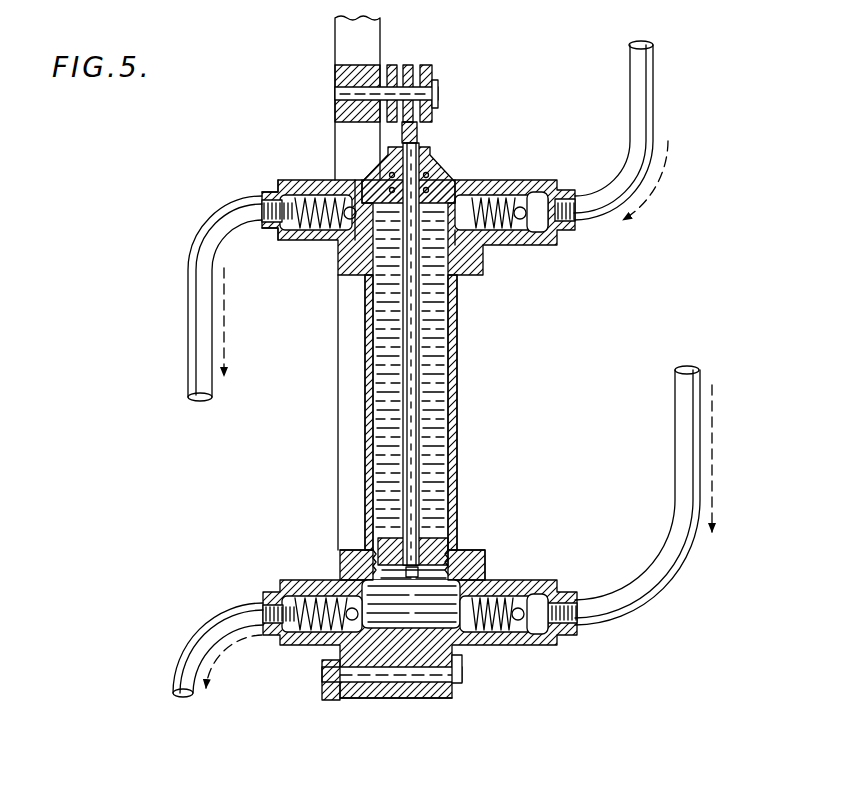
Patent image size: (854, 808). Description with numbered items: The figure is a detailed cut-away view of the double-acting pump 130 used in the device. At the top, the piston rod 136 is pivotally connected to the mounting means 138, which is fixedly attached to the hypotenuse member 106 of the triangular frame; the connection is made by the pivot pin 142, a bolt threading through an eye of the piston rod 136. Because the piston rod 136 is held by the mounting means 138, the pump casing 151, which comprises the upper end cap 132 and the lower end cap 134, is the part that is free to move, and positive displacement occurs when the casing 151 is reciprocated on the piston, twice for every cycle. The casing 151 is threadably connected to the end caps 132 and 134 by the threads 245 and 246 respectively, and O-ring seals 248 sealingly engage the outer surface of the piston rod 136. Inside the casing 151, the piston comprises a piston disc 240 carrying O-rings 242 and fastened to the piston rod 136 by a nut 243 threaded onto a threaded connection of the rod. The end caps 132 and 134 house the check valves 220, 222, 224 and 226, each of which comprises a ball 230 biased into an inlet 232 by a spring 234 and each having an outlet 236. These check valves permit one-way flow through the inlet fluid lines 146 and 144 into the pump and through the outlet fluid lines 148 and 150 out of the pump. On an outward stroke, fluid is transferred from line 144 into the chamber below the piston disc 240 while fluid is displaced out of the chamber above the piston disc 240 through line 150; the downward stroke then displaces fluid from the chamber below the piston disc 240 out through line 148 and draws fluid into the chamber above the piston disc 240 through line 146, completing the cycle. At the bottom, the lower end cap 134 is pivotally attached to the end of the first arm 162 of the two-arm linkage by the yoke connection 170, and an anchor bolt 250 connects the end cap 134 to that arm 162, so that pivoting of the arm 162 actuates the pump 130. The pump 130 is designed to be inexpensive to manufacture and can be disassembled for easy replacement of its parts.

The hypotenuse member 106 is at (370, 48).
The mounting means 138 is at (443, 68).
The pivot pin 142 is at (350, 91).
The piston rod 136 is at (418, 128).
The end cap 132 is at (422, 170).
The O-ring seals 248 is at (430, 178).
The inlet 232 is at (363, 178).
The outlet 236 is at (318, 190).
The check valve 226 is at (258, 195).
The spring 234 is at (318, 240).
The ball 230 is at (352, 262).
The threads 246 is at (352, 292).
The outlet fluid line 150 is at (200, 380).
The double-acting pump 130 is at (308, 414).
The pump casing 151 is at (458, 455).
The inlet fluid line 144 is at (690, 430).
The inlet fluid line 146 is at (645, 92).
The check valve 222 is at (535, 225).
The piston disc 240 is at (377, 545).
The O-rings 242 is at (452, 546).
The threads 245 is at (465, 563).
The check valve 220 is at (551, 589).
The check valve 224 is at (288, 600).
The outlet fluid line 148 is at (176, 653).
The nut 243 is at (405, 568).
The end cap 134 is at (310, 642).
The first arm 162 is at (322, 694).
The anchor bolt 250 is at (462, 665).
The yoke connection 170 is at (430, 701).